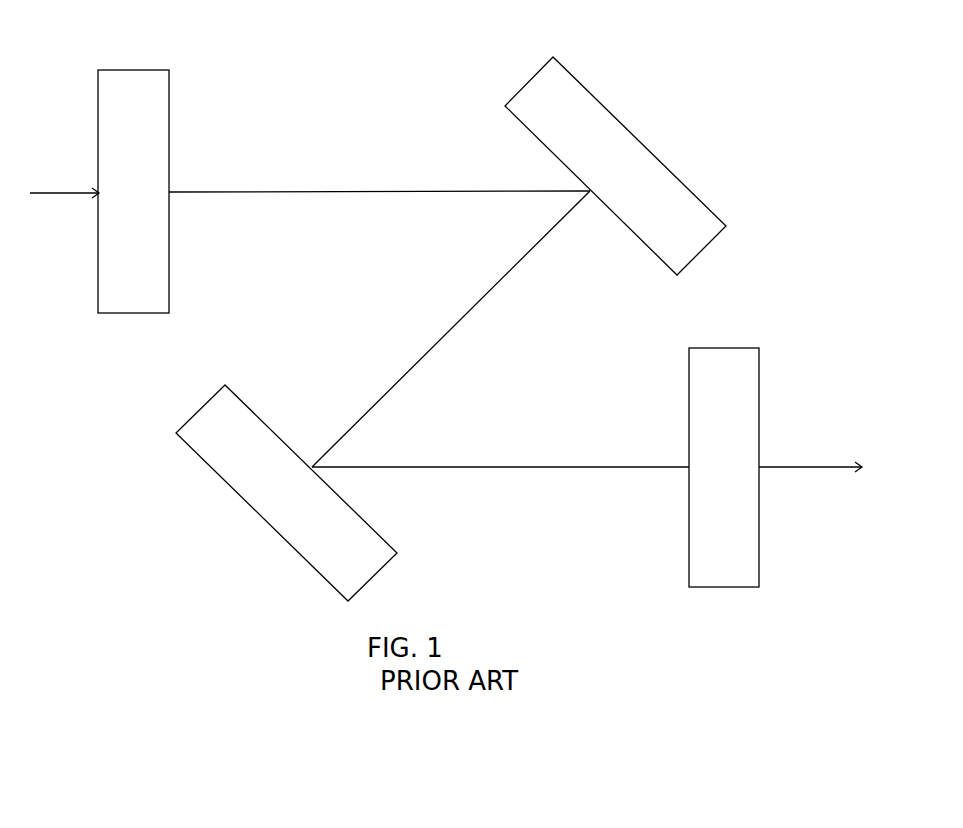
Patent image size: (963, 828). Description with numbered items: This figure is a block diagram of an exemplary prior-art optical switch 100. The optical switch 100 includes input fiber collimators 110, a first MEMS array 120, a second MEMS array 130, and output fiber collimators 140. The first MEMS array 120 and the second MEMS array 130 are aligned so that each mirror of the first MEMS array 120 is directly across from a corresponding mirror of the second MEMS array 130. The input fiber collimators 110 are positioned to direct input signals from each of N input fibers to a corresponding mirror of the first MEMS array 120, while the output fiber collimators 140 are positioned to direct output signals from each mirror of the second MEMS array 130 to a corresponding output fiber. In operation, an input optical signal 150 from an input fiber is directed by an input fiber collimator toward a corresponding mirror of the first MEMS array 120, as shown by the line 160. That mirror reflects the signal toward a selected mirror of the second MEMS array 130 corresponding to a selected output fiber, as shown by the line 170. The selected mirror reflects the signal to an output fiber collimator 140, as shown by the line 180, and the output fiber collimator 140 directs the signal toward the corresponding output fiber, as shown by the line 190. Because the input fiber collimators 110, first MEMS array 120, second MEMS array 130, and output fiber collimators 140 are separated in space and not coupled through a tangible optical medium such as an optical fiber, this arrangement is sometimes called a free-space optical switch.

The optical switch 100 is at (538, 660).
The input fiber collimators 110 is at (130, 57).
The first MEMS array 120 is at (584, 66).
The second MEMS array 130 is at (262, 528).
The output fiber collimators 140 is at (768, 578).
The input optical signal 150 is at (48, 199).
The line 160 is at (347, 197).
The line 170 is at (480, 316).
The line 180 is at (530, 478).
The line 190 is at (842, 493).